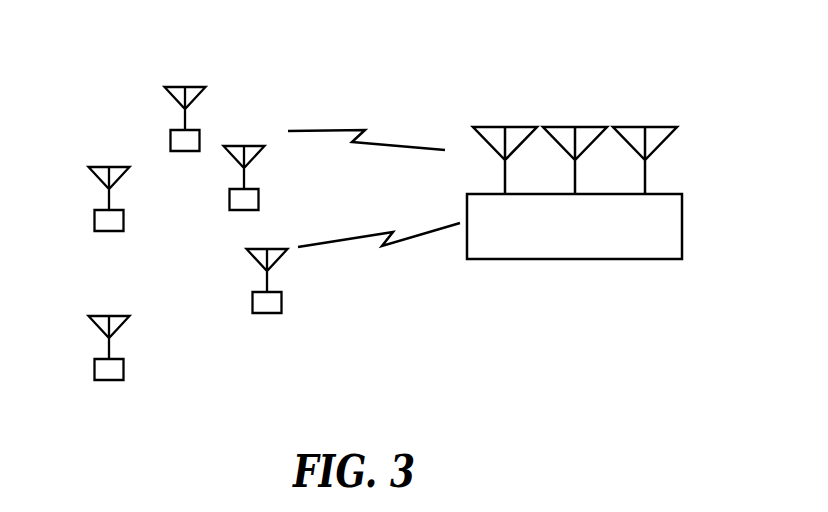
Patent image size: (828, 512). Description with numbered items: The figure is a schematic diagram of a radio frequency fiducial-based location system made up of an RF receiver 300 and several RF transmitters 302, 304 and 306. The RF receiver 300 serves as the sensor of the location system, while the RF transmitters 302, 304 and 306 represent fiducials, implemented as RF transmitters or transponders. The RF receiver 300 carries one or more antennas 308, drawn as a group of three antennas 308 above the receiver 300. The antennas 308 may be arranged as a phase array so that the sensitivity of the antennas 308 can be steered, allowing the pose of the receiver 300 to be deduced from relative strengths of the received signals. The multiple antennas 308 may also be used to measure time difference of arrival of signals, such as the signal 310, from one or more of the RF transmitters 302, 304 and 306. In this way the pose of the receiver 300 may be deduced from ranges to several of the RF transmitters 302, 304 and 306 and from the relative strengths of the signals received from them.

The RF receiver 300 is at (593, 259).
The RF transmitter 302 is at (258, 195).
The RF transmitter 304 is at (282, 304).
The RF transmitter 306 is at (123, 367).
The antennas 308 is at (682, 118).
The signal 310 is at (332, 130).